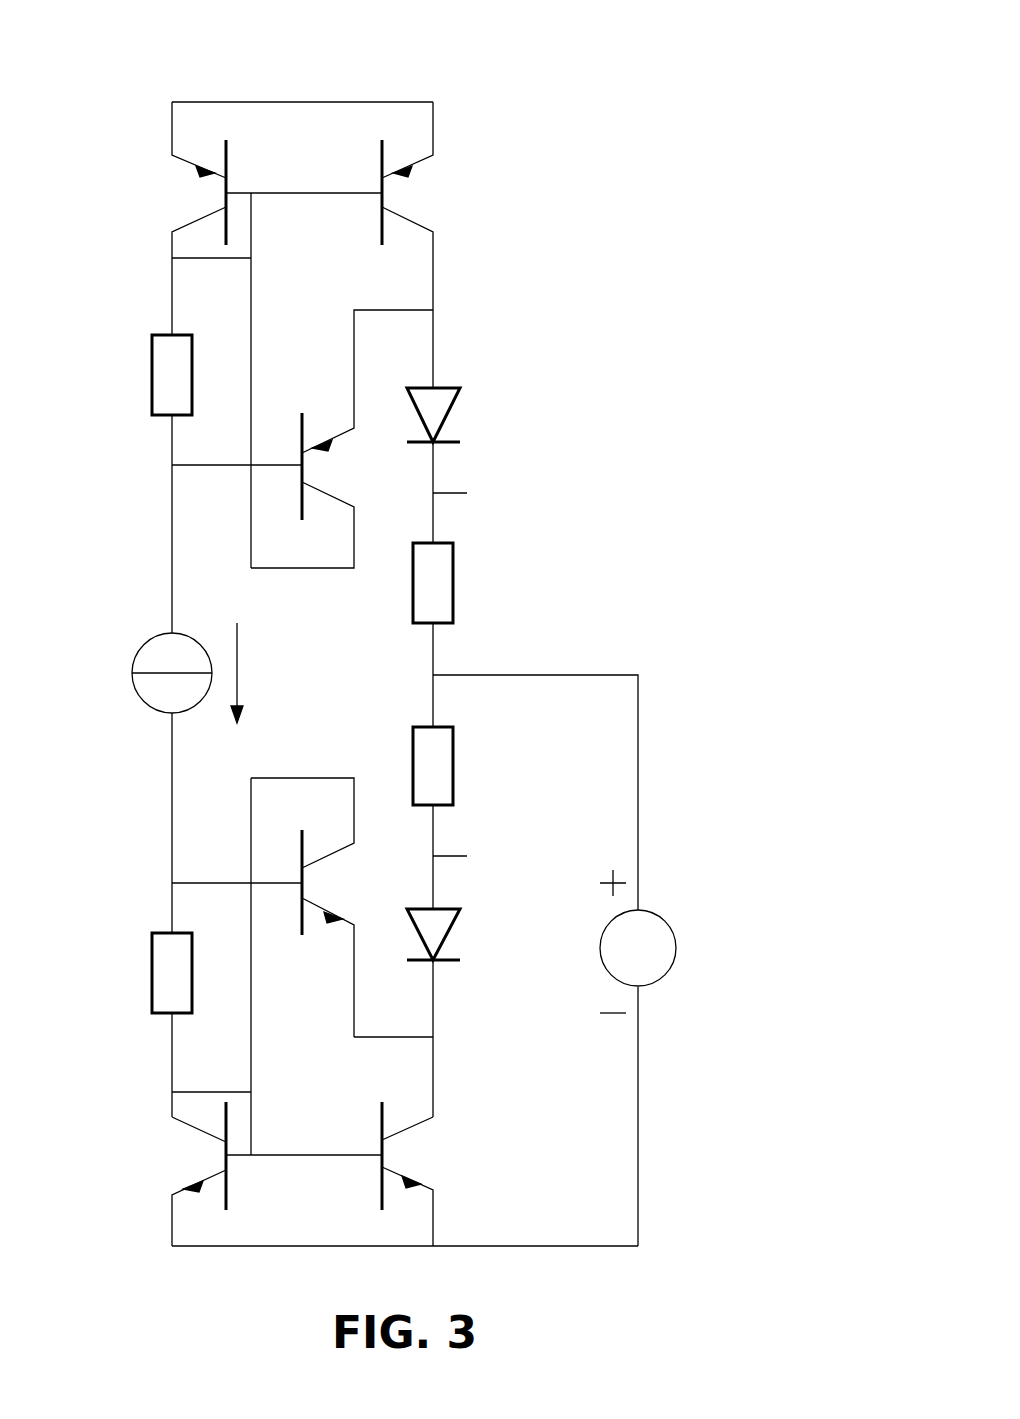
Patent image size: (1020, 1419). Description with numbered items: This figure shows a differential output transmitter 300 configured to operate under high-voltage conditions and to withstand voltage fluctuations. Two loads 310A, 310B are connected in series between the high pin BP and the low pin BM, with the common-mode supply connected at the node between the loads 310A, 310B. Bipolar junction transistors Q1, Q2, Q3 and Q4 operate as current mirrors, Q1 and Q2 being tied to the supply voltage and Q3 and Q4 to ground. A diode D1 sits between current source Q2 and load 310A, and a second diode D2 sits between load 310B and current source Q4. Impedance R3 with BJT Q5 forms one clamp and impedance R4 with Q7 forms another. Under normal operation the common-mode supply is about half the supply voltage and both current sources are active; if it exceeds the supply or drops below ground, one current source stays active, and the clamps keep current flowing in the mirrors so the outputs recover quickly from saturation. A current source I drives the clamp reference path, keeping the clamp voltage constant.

The differential output transmitter 300 is at (687, 83).
The load 310A is at (444, 543).
The load 310B is at (444, 727).